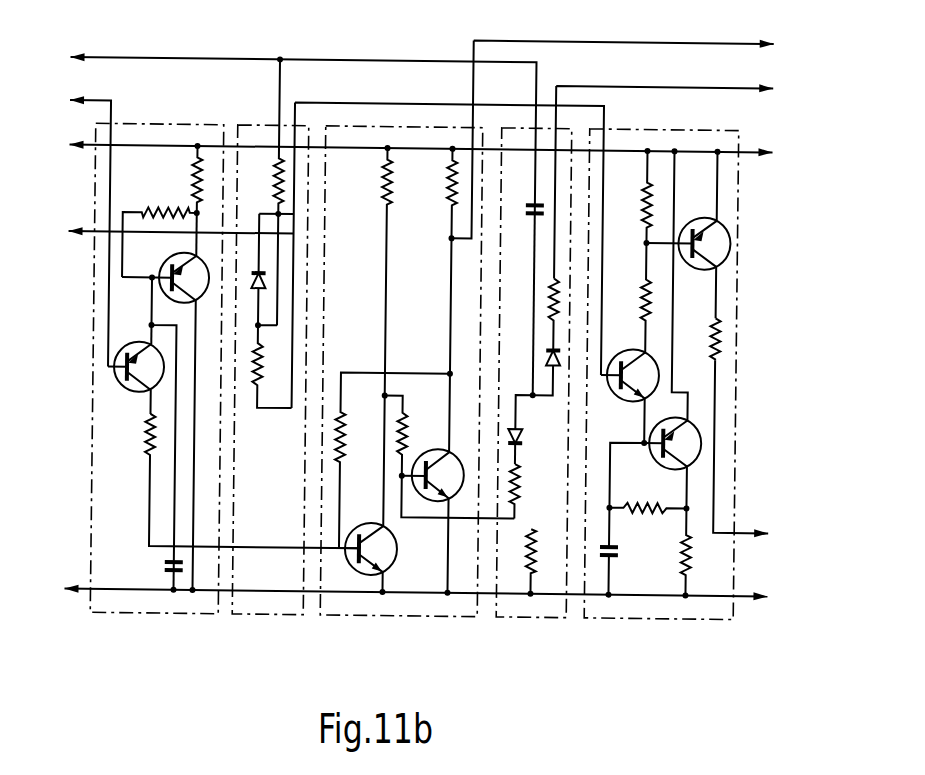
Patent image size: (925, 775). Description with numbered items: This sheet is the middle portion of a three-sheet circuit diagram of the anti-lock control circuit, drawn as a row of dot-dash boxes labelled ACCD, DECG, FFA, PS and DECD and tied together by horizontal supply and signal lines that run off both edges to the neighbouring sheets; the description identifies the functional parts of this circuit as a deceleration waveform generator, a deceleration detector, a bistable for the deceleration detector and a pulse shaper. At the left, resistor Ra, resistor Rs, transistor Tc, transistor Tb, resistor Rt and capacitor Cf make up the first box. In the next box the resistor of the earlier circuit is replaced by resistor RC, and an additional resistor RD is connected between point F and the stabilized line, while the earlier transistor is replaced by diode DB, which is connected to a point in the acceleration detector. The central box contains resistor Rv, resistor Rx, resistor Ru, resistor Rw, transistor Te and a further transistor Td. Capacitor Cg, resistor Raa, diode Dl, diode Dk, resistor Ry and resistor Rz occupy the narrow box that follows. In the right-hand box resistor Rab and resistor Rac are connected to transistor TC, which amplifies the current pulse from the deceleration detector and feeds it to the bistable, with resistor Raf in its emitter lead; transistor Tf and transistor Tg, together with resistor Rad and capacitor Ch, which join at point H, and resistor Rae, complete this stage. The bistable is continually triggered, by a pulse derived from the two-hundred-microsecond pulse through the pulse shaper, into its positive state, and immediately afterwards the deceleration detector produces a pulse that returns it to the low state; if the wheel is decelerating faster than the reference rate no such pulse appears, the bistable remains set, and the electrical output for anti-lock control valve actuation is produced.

The accumulator circuit block ACCD is at (158, 614).
The decoder gate circuit block DECG is at (292, 614).
The flip-flop circuit block FFA is at (458, 617).
The pulse shaper circuit block PS is at (510, 617).
The decoder circuit block DECD is at (670, 620).
The resistor Ra is at (190, 170).
The resistor Rs is at (150, 205).
The transistor Tc is at (163, 268).
The transistor Tb is at (135, 393).
The resistor Rt is at (144, 442).
The capacitor Cf is at (164, 572).
The resistor RC is at (272, 201).
The point F is at (270, 214).
The diode DB is at (266, 287).
The resistor RD is at (259, 410).
The resistor Rv is at (378, 196).
The resistor Rx is at (446, 196).
The resistor Ru is at (344, 432).
The resistor Rw is at (407, 426).
The transistor Te is at (432, 452).
The transistor Td is at (398, 556).
The capacitor Cg is at (530, 204).
The resistor Raa is at (546, 300).
The diode Dl' Dl is at (539, 390).
The diode Dk is at (513, 420).
The resistor Ry is at (523, 497).
The resistor Rz is at (531, 561).
The resistor Rab is at (652, 186).
The transistor TC is at (701, 214).
The resistor Rac is at (640, 286).
The resistor Raf is at (712, 328).
The transistor Tf is at (636, 351).
The transistor Tg is at (655, 467).
The node H is at (611, 505).
The resistor Rad is at (652, 511).
The capacitor Ch is at (618, 551).
The resistor Rae is at (691, 556).